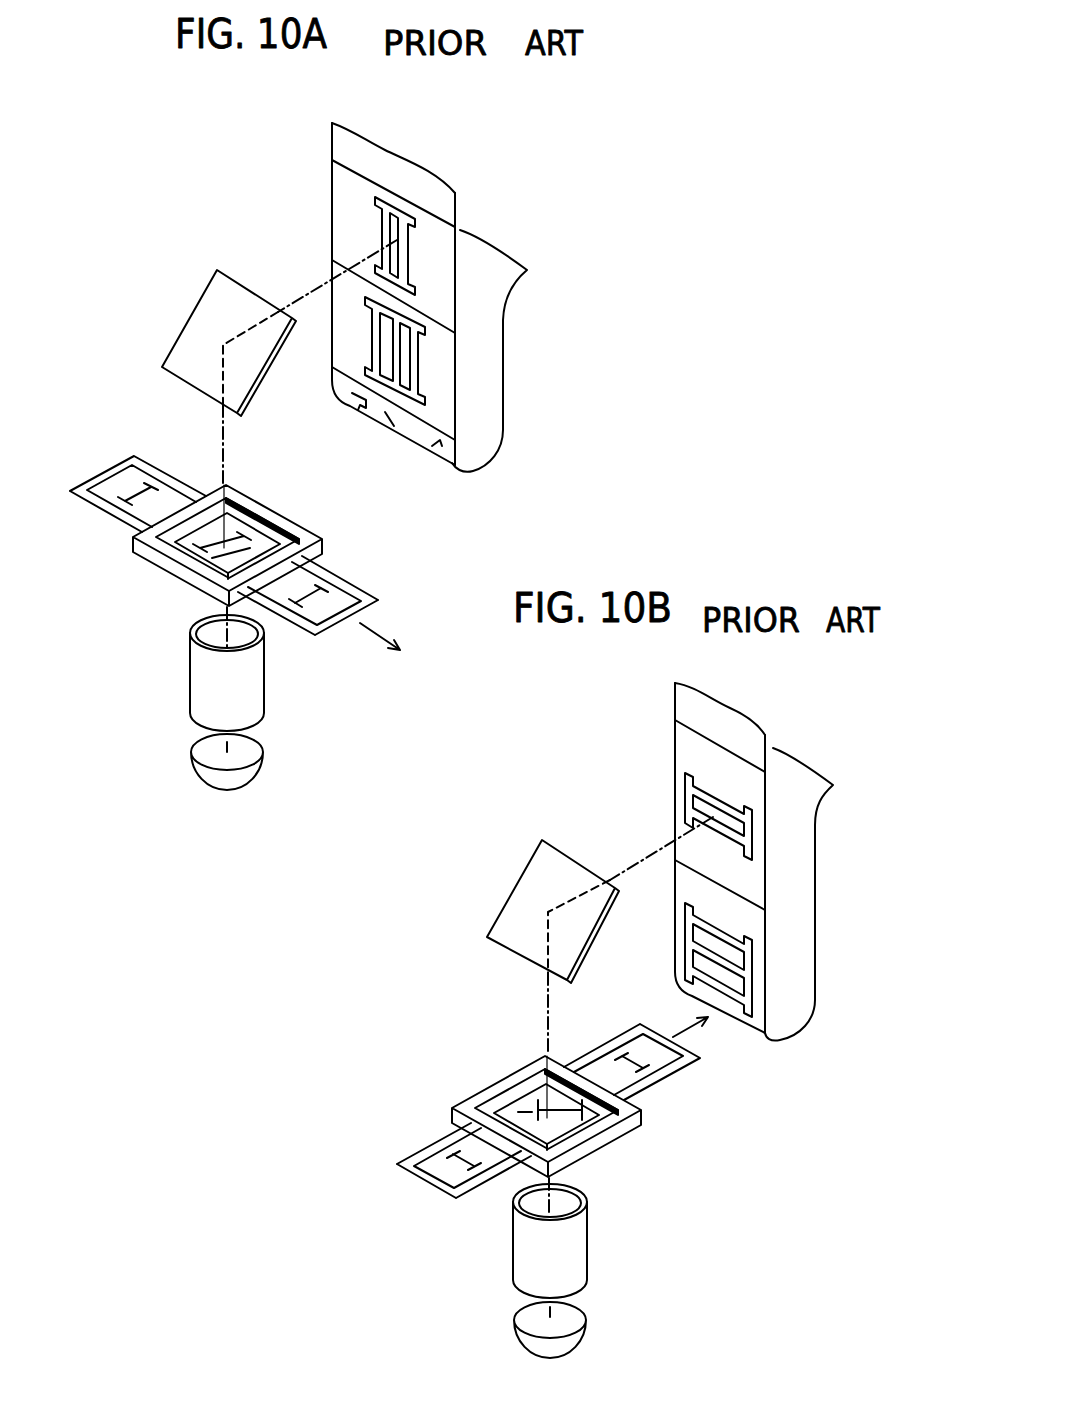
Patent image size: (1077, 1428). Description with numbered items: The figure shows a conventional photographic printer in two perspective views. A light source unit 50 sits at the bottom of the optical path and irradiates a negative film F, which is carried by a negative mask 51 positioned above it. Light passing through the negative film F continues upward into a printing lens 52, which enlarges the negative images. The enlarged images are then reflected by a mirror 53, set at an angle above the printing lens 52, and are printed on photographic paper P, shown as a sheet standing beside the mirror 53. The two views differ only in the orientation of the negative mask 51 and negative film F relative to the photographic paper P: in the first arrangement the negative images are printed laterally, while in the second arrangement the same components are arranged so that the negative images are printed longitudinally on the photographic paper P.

In FIG. 10A, the photographic paper P is at (338, 144).
In FIG. 10B, the photographic paper P is at (682, 712).
In FIG. 10A, the negative film F is at (138, 460).
In FIG. 10B, the negative film F is at (420, 1152).
In FIG. 10A, the light source unit 50 is at (200, 765).
In FIG. 10B, the light source unit 50 is at (587, 1325).
In FIG. 10A, the negative mask 51 is at (178, 573).
In FIG. 10B, the negative mask 51 is at (492, 1082).
In FIG. 10A, the printing lens 52 is at (200, 668).
In FIG. 10B, the printing lens 52 is at (580, 1242).
In FIG. 10A, the mirror 53 is at (205, 320).
In FIG. 10B, the mirror 53 is at (530, 880).